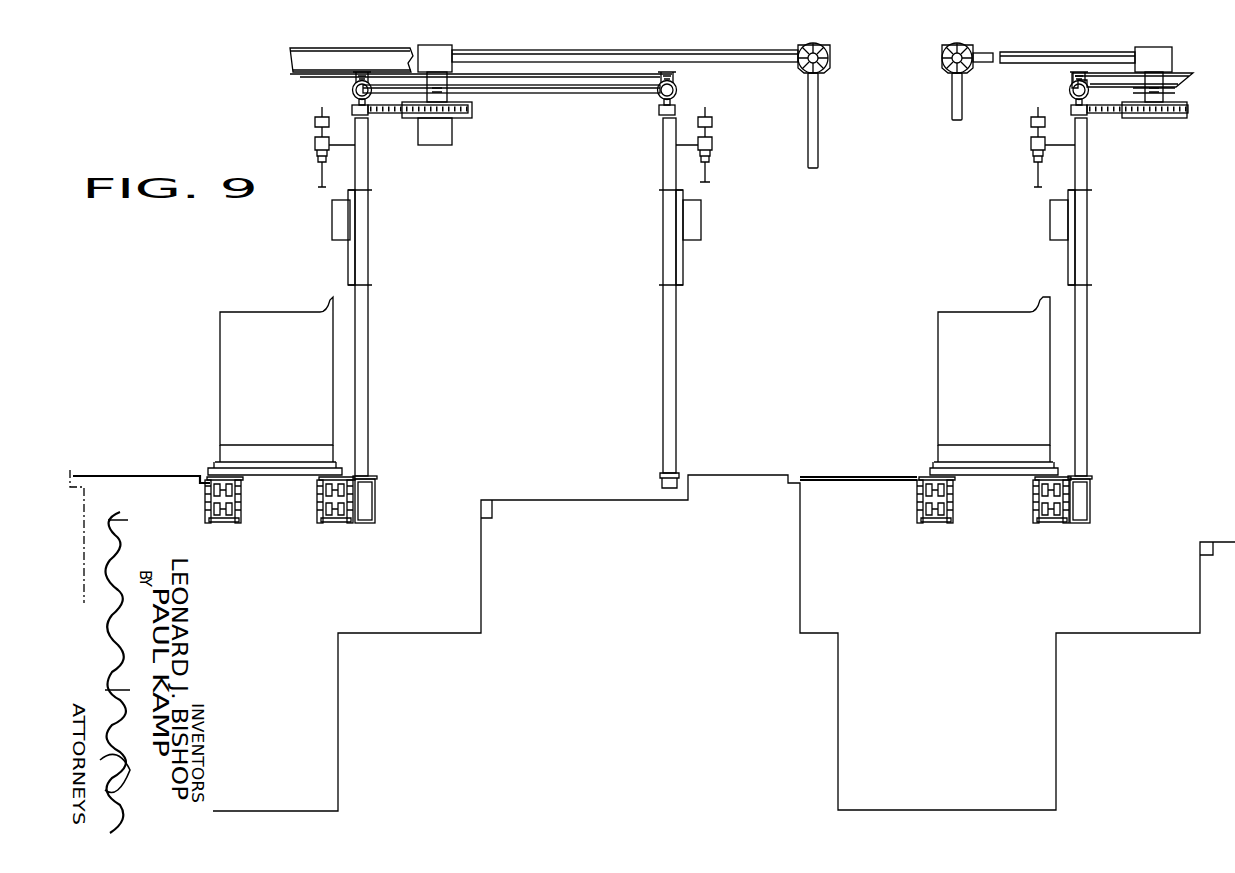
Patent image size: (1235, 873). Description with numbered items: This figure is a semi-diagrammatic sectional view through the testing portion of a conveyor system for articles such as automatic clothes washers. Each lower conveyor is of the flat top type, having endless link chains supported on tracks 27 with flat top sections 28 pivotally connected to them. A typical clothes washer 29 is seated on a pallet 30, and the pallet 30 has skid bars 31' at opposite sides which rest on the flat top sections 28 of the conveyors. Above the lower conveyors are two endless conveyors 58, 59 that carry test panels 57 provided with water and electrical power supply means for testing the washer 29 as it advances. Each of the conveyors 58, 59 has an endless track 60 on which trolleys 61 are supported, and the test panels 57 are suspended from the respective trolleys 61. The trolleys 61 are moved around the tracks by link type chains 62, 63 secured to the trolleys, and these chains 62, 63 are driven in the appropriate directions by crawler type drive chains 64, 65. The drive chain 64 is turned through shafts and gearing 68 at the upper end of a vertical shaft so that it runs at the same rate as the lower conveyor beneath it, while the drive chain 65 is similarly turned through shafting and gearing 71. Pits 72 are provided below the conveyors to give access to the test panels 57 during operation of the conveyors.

The tracks 27 is at (207, 513).
The flat top sections 28 is at (204, 487).
The clothes washer 29 is at (293, 383).
The pallet 30 is at (217, 471).
The skid bars 31' is at (634, 449).
The test panels 57 is at (348, 254).
The endless conveyor 58 is at (638, 91).
The endless conveyor 59 is at (1132, 95).
The endless track 60 is at (565, 86).
The trolleys 61 is at (352, 79).
The link type chain 62 is at (352, 107).
The link type chain 63 is at (1072, 108).
The crawler type drive chain 64 is at (377, 112).
The crawler type drive chain 65 is at (1110, 113).
The shafts and gearing 68 is at (843, 69).
The shafting and gearing 71 is at (976, 79).
The pits 72 is at (298, 635).